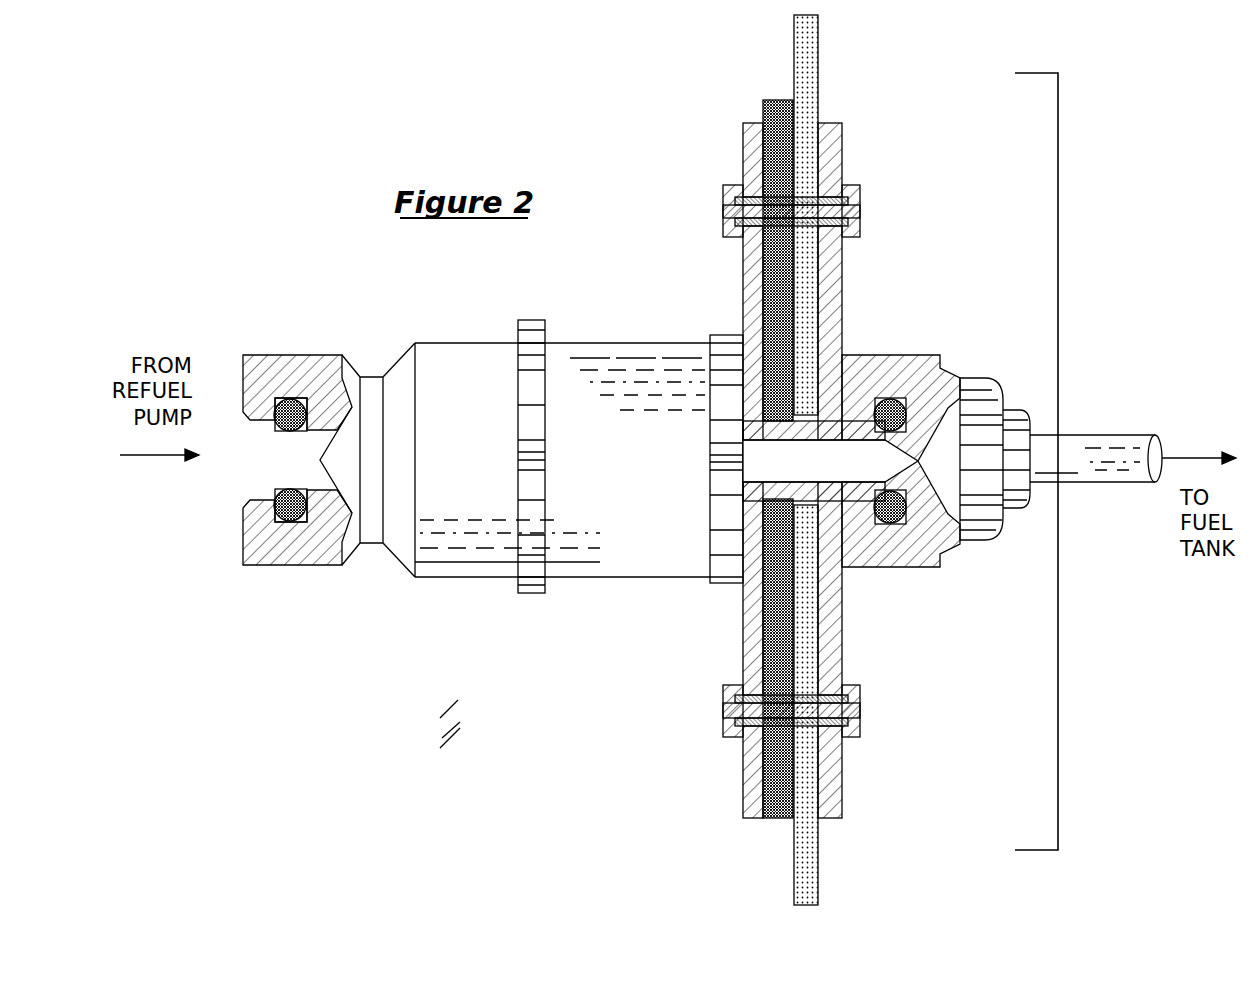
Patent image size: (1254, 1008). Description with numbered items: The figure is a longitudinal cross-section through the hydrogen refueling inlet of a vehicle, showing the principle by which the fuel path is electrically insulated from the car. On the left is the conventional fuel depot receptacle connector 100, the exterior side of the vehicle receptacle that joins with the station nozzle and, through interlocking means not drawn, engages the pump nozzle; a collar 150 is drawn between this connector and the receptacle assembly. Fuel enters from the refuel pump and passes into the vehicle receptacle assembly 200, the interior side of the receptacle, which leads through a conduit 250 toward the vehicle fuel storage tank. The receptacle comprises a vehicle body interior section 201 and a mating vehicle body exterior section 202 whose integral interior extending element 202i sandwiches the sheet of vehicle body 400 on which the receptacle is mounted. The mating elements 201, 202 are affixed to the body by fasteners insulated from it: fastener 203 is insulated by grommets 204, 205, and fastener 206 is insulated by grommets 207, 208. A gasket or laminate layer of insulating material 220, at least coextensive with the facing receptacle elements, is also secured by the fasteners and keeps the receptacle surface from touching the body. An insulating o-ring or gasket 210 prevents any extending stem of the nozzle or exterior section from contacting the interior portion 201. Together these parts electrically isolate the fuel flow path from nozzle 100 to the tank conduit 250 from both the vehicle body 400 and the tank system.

The vehicle receptacle exterior side / fuel depot receptacle connector 100 is at (473, 343).
The collar 150 is at (707, 547).
The vehicle receptacle assembly 200 is at (1094, 759).
The vehicle body interior section 201 is at (842, 253).
The vehicle body exterior section 202 is at (743, 138).
The integral interior extending element 202i is at (845, 432).
The fastener 203 is at (723, 211).
The grommet 204 is at (741, 173).
The grommet 205 is at (843, 173).
The fastener 206 is at (723, 708).
The grommet 207 is at (743, 745).
The grommet 208 is at (848, 672).
The insulating o-ring or gasket 210 is at (905, 400).
The insulating gasket or laminate layer 220 is at (765, 100).
The conduit to vehicle fuel storage tank 250 is at (1138, 437).
The vehicle body 400 is at (805, 875).